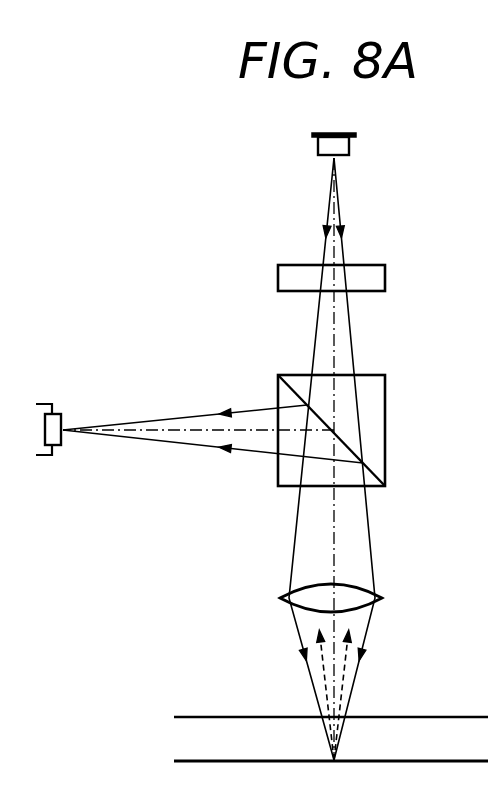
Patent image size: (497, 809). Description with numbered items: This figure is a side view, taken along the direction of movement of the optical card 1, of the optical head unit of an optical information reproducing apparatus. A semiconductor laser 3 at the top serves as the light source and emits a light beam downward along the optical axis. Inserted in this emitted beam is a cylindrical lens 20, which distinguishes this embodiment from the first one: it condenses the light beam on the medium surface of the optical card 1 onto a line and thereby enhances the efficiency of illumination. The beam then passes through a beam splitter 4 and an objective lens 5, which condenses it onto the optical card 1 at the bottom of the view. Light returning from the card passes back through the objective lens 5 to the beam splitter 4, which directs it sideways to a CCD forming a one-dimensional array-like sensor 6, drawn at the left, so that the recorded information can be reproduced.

The optical card 1 is at (165, 711).
The semiconductor laser 3 is at (351, 147).
The beam splitter 4 is at (386, 410).
The objective lens 5 is at (382, 596).
The one-dimensional array-like sensor 6 is at (62, 437).
The cylindrical lens 20 is at (385, 275).